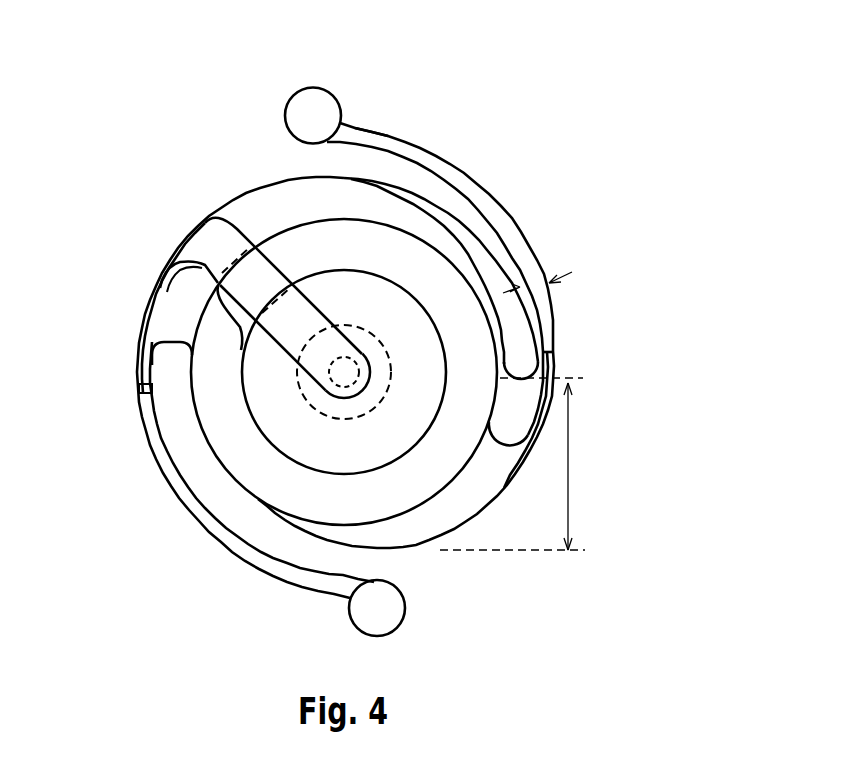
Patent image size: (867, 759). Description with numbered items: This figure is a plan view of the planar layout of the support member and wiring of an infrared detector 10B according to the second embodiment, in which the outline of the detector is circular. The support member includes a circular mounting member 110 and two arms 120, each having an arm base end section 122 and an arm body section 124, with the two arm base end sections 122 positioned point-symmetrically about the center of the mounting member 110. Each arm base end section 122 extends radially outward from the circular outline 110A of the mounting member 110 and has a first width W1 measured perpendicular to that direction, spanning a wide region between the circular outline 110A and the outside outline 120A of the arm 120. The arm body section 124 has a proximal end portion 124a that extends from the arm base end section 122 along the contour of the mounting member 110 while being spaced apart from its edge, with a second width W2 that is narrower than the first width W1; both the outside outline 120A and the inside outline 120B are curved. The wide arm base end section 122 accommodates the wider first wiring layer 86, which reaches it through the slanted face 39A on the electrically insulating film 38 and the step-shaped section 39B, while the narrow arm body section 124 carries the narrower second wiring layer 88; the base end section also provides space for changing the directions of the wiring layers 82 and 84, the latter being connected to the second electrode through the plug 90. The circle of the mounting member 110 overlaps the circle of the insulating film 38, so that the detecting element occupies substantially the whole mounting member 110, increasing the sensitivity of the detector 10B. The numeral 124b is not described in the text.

The infrared detector 10B is at (584, 148).
The electrically insulating film 38 is at (344, 372).
The slanted face 39A is at (240, 342).
The step-shaped section 39B is at (192, 268).
The wiring layer 82 is at (557, 381).
The wiring layer 84 is at (246, 218).
The first wiring layer 86 is at (220, 230).
The second wiring layer 88 is at (166, 268).
The plug 90 is at (344, 372).
The mounting member 110 is at (414, 433).
The circular outline 110A is at (407, 228).
The arm 120 is at (467, 337).
The outside outline 120A is at (253, 190).
The inside outline 120B is at (300, 555).
The arm base end section 122 is at (397, 157).
The arm body section 124 is at (549, 299).
The proximal end portion 124a is at (550, 352).
The outer surface of outer band layer 124b is at (365, 133).
The first width W1 is at (512, 466).
The second width W2 is at (550, 275).